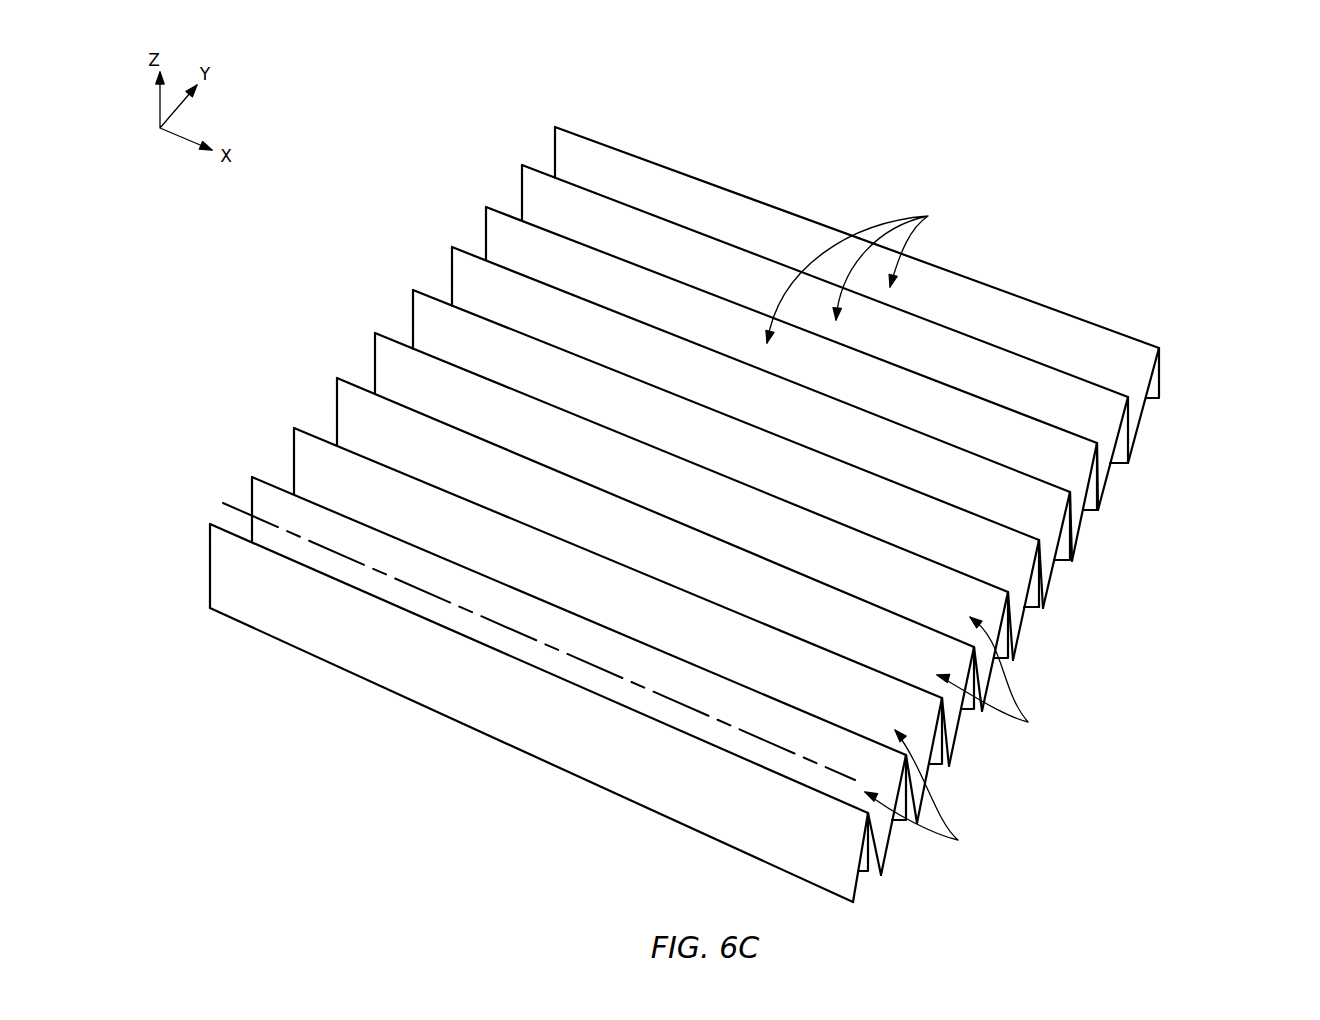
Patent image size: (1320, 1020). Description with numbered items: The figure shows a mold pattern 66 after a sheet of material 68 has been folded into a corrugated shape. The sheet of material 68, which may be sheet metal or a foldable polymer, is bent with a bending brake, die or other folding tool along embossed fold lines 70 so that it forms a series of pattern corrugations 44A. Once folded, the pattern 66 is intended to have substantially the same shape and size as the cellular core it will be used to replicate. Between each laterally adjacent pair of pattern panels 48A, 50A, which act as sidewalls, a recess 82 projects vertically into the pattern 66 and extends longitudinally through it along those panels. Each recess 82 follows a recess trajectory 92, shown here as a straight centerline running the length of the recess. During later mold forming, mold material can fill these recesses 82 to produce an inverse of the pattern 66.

The pattern corrugation 44A is at (203, 517).
The pattern panel 48A is at (1040, 568).
The pattern panel 50A is at (1029, 608).
The mold pattern 66 is at (708, 483).
The sheet of material 68 is at (1175, 378).
The fold line 70 is at (1058, 367).
The recess 82 is at (910, 526).
The recess trajectory 92 is at (401, 582).